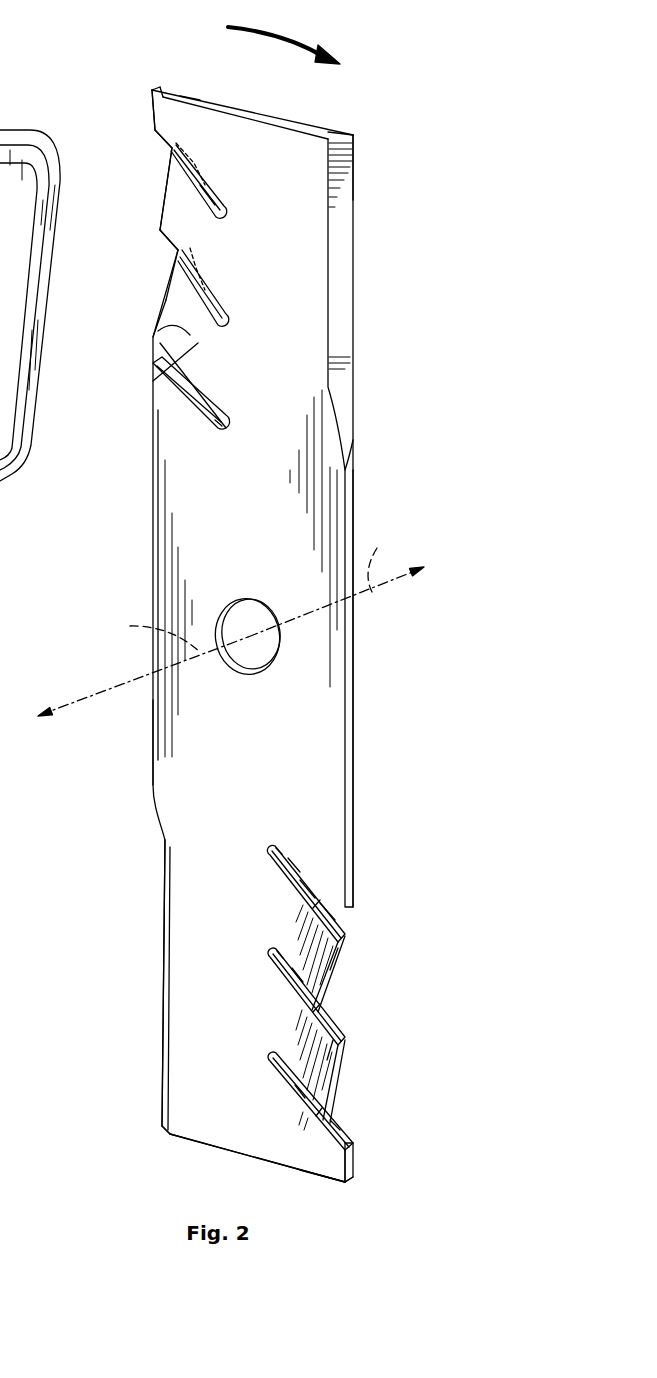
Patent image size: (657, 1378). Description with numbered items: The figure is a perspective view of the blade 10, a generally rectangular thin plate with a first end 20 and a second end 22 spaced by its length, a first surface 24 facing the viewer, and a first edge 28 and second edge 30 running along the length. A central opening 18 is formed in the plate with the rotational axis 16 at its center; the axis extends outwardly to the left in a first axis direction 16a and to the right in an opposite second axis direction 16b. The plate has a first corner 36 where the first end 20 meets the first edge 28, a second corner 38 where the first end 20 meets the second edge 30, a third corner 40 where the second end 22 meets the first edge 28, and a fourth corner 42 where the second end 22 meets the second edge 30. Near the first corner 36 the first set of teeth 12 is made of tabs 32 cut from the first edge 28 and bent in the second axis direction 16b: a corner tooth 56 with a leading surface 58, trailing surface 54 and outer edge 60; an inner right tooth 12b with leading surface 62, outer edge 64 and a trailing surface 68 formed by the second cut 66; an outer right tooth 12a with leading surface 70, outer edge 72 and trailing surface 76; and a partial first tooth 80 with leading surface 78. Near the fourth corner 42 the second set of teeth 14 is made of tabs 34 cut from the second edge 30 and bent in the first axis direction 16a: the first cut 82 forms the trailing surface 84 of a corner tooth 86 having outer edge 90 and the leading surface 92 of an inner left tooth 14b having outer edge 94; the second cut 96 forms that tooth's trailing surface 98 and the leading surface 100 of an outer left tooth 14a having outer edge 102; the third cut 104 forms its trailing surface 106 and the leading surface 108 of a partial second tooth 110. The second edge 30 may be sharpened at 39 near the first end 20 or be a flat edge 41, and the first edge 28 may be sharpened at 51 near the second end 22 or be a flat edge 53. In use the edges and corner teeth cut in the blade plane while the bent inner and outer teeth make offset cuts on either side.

The blade 10 is at (375, 709).
The first set of teeth 12 is at (142, 240).
The outer right tooth 12a is at (155, 383).
The inner right tooth 12b is at (170, 218).
The second set of teeth 14 is at (398, 1003).
The outer left tooth 14a is at (341, 940).
The inner left tooth 14b is at (345, 1042).
The rotational axis 16 is at (215, 650).
The first axis direction 16a is at (72, 690).
The second axis direction 16b is at (336, 582).
The central opening 18 is at (273, 667).
The first end 20 is at (275, 115).
The second end 22 is at (232, 1160).
The first surface 24 is at (277, 293).
The first edge 28 is at (153, 537).
The second edge 30 is at (347, 641).
The tabs 32 is at (180, 202).
The tabs 34 is at (328, 874).
The first corner 36 is at (153, 70).
The second corner 38 is at (358, 122).
The sharpened portion 39 is at (340, 240).
The third corner 40 is at (152, 1133).
The flat edge 41 is at (345, 503).
The fourth corner 42 is at (347, 1198).
The sharpened portion 51 is at (166, 956).
The flat edge 53 is at (153, 730).
The trailing surface 54 is at (173, 137).
The corner tooth 56 is at (161, 89).
The leading surface 58 is at (187, 86).
The outer edge 60 is at (162, 107).
The leading surface 62 is at (207, 187).
The outer edge 64 is at (173, 150).
The second cut 66 is at (200, 293).
The trailing surface 68 is at (168, 280).
The leading surface 70 is at (228, 312).
The outer edge 72 is at (164, 298).
The trailing surface 76 is at (222, 420).
The leading surface 78 is at (197, 398).
The partial first tooth 80 is at (153, 397).
The first cut 82 is at (271, 1058).
The trailing surface 84 is at (350, 1138).
The corner tooth 86 is at (325, 1160).
The outer edge 90 is at (352, 1167).
The leading surface 92 is at (301, 1098).
The outer edge 94 is at (338, 1082).
The second cut 96 is at (272, 953).
The trailing surface 98 is at (342, 982).
The leading surface 100 is at (296, 974).
The outer edge 102 is at (332, 976).
The third cut 104 is at (275, 849).
The trailing surface 106 is at (334, 913).
The leading surface 108 is at (323, 862).
The partial second tooth 110 is at (323, 866).